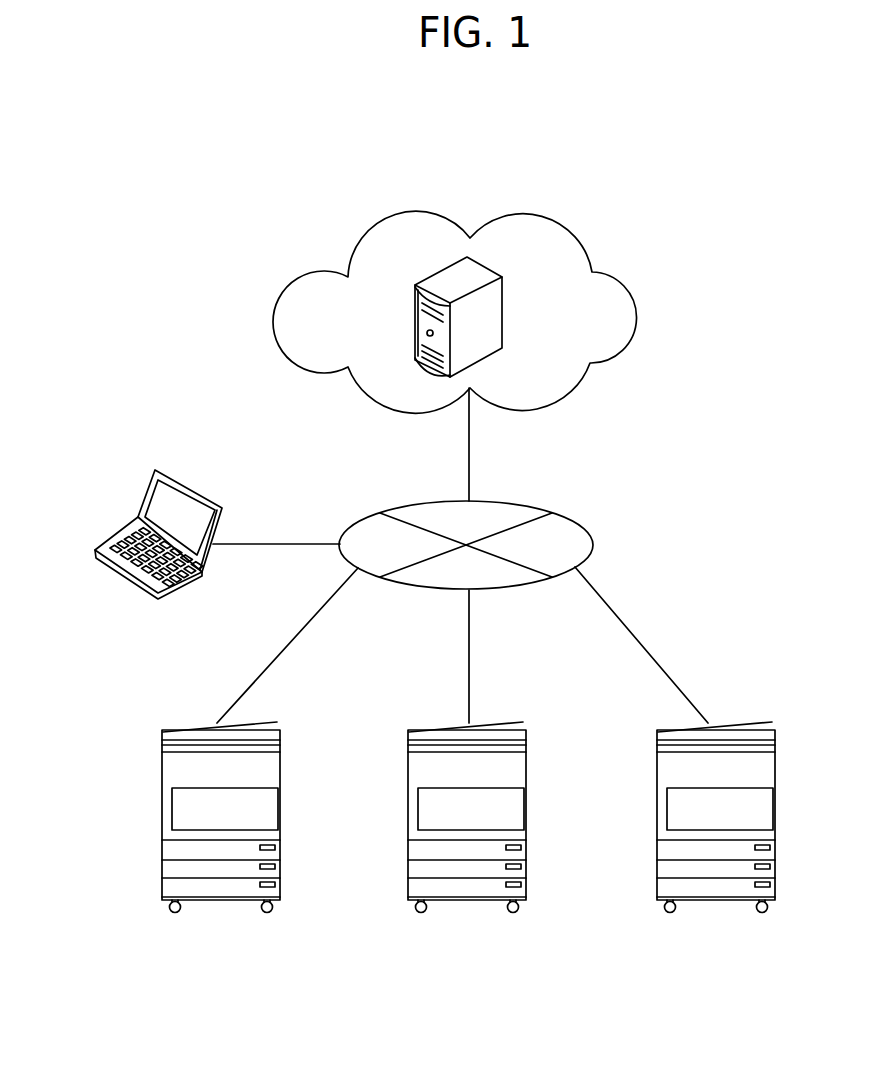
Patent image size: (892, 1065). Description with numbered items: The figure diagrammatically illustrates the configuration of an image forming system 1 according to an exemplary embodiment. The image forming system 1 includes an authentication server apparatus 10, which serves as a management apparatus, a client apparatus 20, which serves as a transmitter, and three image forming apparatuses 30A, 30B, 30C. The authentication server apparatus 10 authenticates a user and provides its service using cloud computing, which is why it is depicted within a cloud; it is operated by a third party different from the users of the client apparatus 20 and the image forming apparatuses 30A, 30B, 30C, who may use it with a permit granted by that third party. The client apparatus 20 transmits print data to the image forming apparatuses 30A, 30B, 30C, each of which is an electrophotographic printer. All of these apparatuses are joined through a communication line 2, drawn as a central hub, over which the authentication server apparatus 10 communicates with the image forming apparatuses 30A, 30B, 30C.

The image forming system 1 is at (611, 146).
The authentication server apparatus 10 is at (503, 300).
The communication line 2 is at (575, 518).
The client apparatus 20 is at (107, 545).
The image forming apparatus 30A is at (201, 725).
The image forming apparatus 30B is at (447, 726).
The image forming apparatus 30C is at (745, 723).